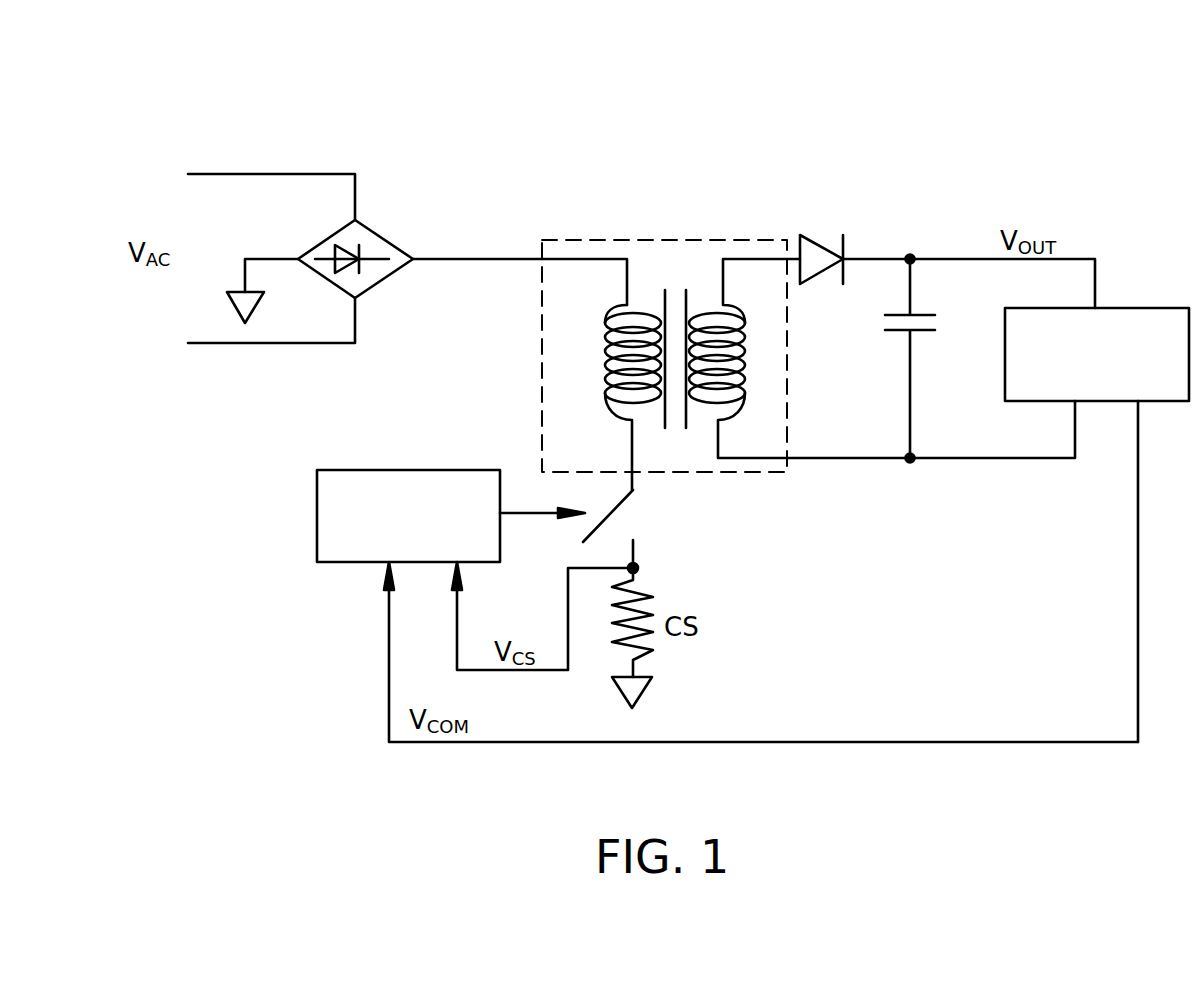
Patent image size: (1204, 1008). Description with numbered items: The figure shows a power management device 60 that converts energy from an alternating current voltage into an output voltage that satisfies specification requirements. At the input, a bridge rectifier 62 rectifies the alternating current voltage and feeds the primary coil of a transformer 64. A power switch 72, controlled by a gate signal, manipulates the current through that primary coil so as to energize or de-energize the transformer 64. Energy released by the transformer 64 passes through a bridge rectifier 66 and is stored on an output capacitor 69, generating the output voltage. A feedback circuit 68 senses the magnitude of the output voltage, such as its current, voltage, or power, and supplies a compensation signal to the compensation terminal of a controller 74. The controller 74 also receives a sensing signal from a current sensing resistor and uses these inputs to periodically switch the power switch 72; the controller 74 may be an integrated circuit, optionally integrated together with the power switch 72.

The power management device 60 is at (1003, 143).
The bridge rectifier 62 is at (383, 235).
The transformer 64 is at (710, 239).
The bridge rectifier 66 is at (823, 242).
The feedback circuit 68 is at (1097, 354).
The output capacitor 69 is at (882, 323).
The power switch 72 is at (660, 521).
The controller 74 is at (451, 516).